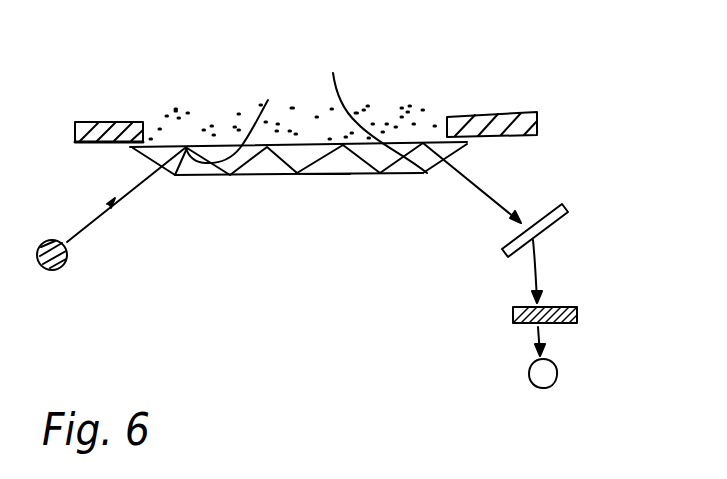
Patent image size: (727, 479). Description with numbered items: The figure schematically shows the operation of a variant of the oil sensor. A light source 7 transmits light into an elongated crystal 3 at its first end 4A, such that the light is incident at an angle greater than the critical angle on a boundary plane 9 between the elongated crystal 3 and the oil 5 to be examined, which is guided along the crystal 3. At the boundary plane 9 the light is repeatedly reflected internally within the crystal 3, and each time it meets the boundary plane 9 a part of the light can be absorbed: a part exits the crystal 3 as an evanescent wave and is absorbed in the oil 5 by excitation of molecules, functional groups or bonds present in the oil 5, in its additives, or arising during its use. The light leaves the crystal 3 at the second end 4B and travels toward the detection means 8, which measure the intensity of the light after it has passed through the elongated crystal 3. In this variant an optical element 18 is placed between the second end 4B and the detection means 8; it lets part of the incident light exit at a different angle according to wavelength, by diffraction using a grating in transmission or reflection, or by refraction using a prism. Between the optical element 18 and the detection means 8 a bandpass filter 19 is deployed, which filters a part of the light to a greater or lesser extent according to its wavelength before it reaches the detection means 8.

The elongated crystal 3 is at (222, 158).
The first end 4A is at (268, 100).
The second end 4B is at (333, 73).
The oil to be examined 5 is at (376, 118).
The boundary plane 9 is at (312, 174).
The light source 7 is at (63, 270).
The detection means 8 is at (528, 383).
The optical element 18 is at (580, 202).
The bandpass filter 19 is at (600, 320).